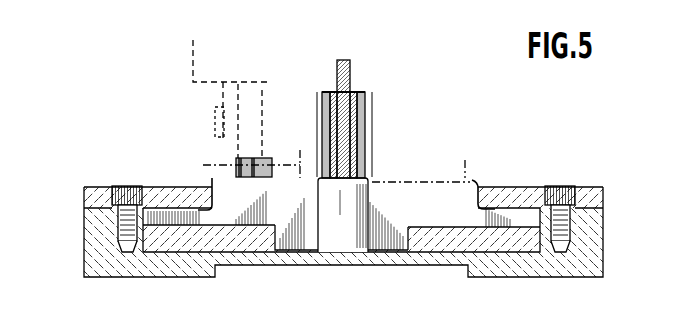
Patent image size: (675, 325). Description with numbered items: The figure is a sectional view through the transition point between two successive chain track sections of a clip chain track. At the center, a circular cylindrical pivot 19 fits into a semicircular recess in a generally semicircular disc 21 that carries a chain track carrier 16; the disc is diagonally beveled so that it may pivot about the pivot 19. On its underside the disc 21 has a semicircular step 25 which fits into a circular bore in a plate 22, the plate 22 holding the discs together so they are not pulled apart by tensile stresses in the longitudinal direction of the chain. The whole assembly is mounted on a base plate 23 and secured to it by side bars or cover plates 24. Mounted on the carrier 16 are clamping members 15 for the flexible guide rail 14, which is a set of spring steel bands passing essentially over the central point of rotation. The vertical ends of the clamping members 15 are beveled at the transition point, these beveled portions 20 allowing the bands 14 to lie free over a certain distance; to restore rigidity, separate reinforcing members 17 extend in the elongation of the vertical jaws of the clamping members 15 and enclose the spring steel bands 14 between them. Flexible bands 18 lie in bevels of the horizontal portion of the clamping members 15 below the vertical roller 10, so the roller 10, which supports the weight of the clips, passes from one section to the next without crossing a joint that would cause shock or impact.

The vertical roller 10 is at (252, 88).
The flexible guide rail 14 is at (350, 70).
The clamping member 15 is at (300, 162).
The chain track carrier 16 is at (473, 179).
The reinforcing member 17 is at (333, 94).
The flexible band 18 is at (249, 182).
The pivot 19 is at (328, 240).
The beveled portion 20 is at (325, 108).
The semicircular disc 21 is at (205, 208).
The plate 22 is at (171, 252).
The base plate 23 is at (84, 238).
The cover plate 24 is at (99, 190).
The semicircular step 25 is at (402, 240).